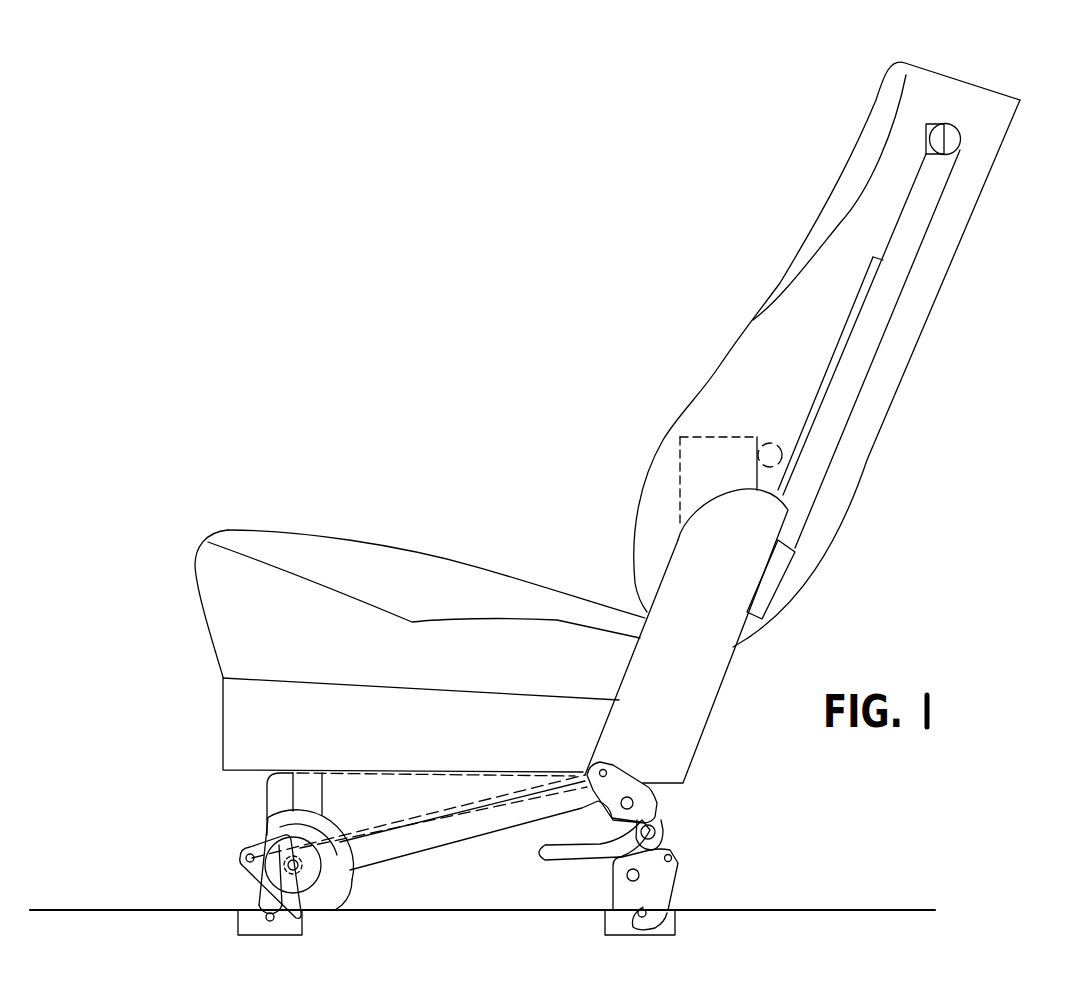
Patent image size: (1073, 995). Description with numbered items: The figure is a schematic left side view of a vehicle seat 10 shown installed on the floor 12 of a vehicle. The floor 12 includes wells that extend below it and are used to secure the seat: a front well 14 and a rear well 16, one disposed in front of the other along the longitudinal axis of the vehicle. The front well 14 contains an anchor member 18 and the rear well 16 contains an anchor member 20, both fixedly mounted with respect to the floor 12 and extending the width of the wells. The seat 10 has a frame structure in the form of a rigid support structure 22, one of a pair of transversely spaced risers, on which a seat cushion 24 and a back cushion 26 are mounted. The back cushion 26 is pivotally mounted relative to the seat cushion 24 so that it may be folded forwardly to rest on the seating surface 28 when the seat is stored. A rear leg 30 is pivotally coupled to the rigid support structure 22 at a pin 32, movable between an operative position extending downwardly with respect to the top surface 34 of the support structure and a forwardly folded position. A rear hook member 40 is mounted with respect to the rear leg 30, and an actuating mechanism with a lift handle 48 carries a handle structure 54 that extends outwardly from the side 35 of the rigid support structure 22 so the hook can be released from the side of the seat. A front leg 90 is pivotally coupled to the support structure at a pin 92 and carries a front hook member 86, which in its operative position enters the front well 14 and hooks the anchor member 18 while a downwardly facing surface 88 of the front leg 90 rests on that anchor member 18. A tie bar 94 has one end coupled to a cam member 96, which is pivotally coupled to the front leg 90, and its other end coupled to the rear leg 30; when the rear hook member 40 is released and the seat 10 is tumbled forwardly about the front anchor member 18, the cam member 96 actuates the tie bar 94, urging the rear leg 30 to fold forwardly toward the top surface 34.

The vehicle seat 10 is at (488, 440).
The floor 12 is at (784, 909).
The front well 14 is at (243, 908).
The rear well 16 is at (610, 907).
The anchor member 18 is at (297, 917).
The anchor member 20 is at (670, 896).
The rigid support structure 22 is at (407, 848).
The seat cushion 24 is at (357, 558).
The back cushion 26 is at (722, 350).
The seating surface 28 is at (480, 567).
The rear leg 30 is at (682, 839).
The pin 32 is at (650, 783).
The top surface 34 is at (453, 778).
The side 35 is at (477, 833).
The rear hook member 40 is at (650, 903).
The lift handle 48 is at (660, 803).
The handle structure 54 is at (543, 865).
The front hook member 86 is at (264, 914).
The downwardly facing surface 88 is at (245, 858).
The front leg 90 is at (307, 873).
The pin 92 is at (270, 845).
The tie bar 94 is at (386, 816).
The cam member 96 is at (240, 852).